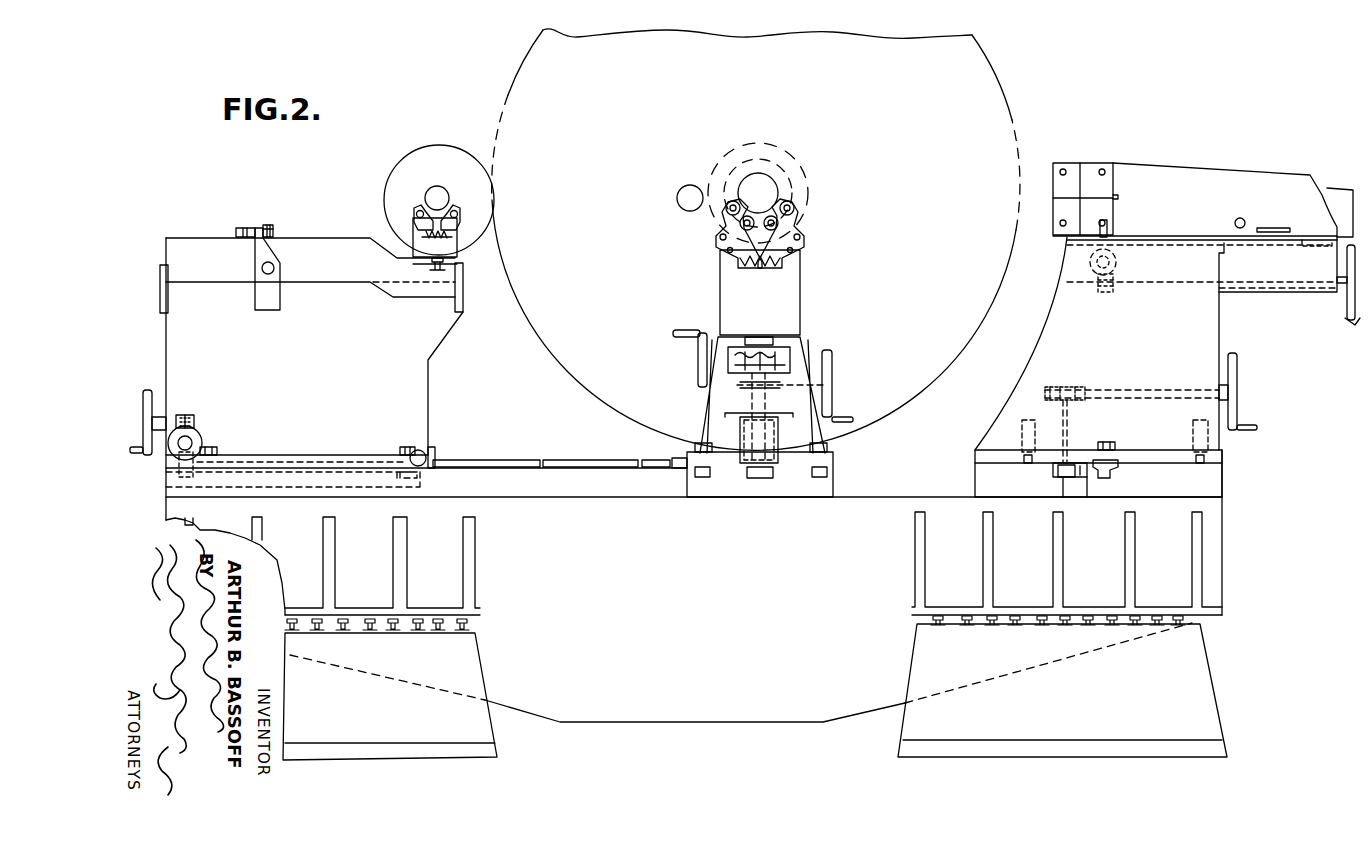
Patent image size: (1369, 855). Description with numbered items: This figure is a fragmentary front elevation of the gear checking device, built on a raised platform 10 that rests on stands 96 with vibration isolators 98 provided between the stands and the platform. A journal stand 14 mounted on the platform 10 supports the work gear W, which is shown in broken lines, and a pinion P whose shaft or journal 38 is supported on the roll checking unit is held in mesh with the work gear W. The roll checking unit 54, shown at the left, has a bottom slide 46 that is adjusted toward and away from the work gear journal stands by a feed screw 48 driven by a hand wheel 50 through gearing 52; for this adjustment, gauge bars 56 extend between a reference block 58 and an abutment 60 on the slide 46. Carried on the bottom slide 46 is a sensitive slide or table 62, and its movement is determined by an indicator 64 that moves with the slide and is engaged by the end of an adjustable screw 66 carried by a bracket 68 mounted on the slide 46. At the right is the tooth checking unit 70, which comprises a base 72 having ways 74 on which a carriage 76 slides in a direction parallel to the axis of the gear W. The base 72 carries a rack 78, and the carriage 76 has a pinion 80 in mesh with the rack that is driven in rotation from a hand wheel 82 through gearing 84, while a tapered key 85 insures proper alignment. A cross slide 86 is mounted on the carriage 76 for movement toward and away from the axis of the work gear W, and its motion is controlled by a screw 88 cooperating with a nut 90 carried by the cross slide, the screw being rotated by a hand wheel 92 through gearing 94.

The raised platform 10 is at (1225, 556).
The journal stand 14 is at (810, 300).
The shaft or journal of pinion 38 is at (428, 197).
The bottom slide 46 is at (430, 411).
The feed screw 48 is at (300, 450).
The hand wheel 50 is at (148, 388).
The gearing 52 is at (210, 436).
The roll checking unit 54 is at (160, 241).
The gauge bars 56 is at (576, 457).
The reference block 58 is at (670, 447).
The abutment 60 is at (437, 453).
The sensitive slide or table 62 is at (333, 238).
The indicator 64 is at (238, 228).
The adjustable screw 66 is at (270, 225).
The bracket 68 is at (255, 300).
The tooth checking unit 70 is at (1137, 155).
The base 72 is at (1225, 493).
The ways 74 is at (1212, 457).
The carriage 76 is at (1221, 341).
The rack 78 is at (1086, 482).
The pinion 80 is at (1055, 470).
The hand wheel 82 is at (1240, 383).
The gearing 84 is at (1080, 386).
The tapered key 85 is at (1120, 471).
The cross slide 86 is at (1233, 162).
The screw 88 is at (1203, 243).
The nut 90 is at (1310, 255).
The hand wheel 92 is at (1345, 313).
The gearing 94 is at (1095, 291).
The stands 96 is at (1213, 684).
The vibration isolators 98 is at (960, 628).
The work gear W is at (1012, 135).
The pinion P is at (419, 160).